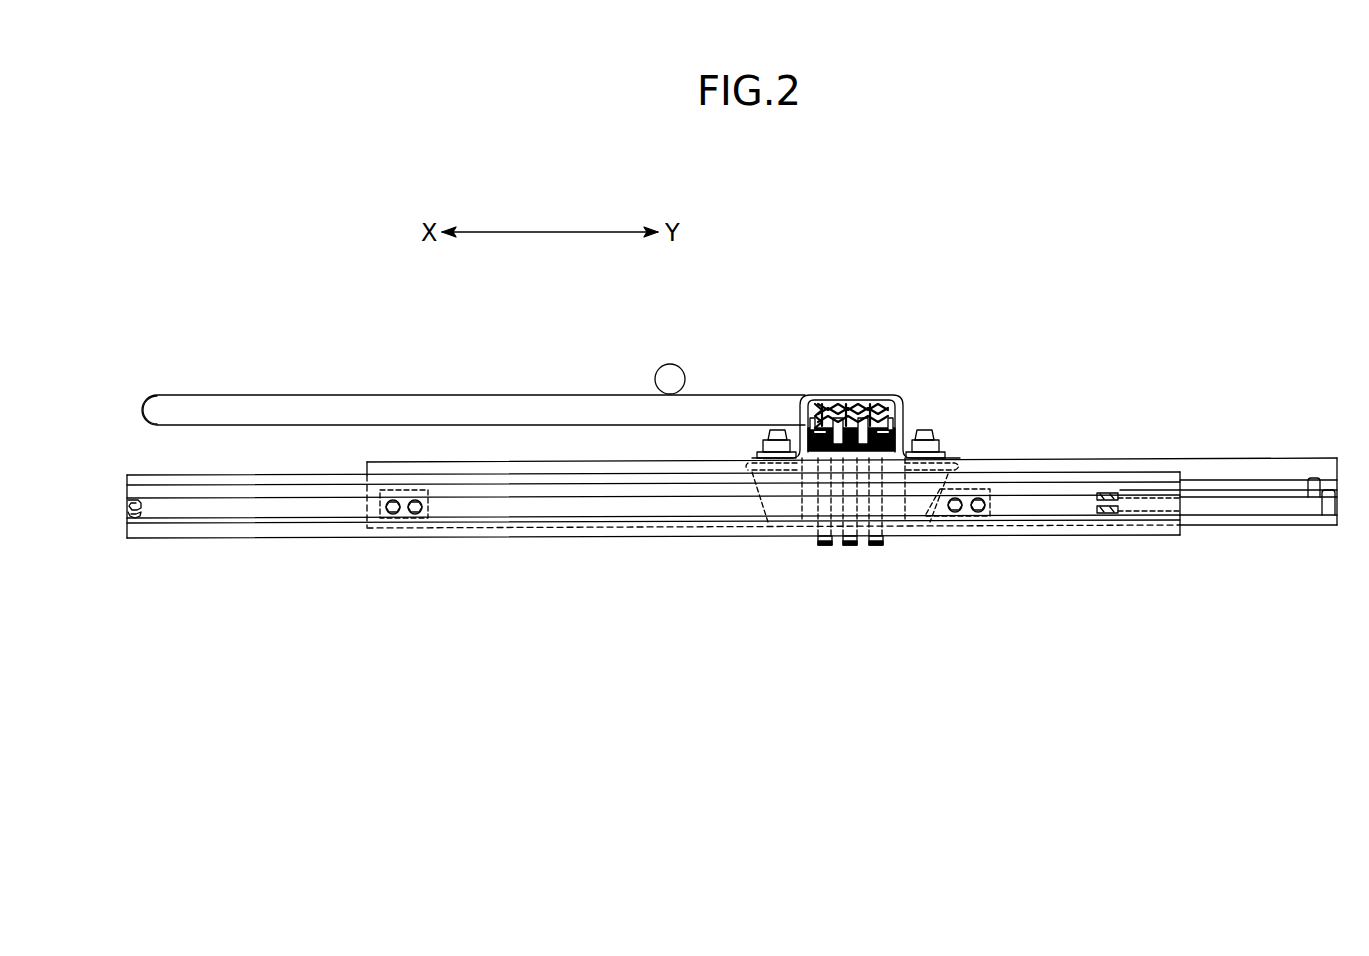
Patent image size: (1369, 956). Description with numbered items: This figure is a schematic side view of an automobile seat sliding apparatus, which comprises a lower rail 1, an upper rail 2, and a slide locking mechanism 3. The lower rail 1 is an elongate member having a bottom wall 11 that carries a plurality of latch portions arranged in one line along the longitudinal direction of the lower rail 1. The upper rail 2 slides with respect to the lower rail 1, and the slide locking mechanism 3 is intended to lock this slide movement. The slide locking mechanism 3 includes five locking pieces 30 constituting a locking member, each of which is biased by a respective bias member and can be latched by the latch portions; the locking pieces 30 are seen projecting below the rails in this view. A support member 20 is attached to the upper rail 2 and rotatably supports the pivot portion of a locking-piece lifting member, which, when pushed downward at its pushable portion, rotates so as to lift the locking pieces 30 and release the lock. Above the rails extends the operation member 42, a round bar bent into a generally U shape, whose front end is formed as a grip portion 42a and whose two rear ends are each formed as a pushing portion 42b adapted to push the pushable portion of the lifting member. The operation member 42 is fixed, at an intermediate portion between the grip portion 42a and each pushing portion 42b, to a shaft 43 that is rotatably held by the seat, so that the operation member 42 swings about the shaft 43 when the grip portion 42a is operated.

The lower rail 1 is at (250, 540).
The bottom wall 11 is at (1116, 540).
The upper rail 2 is at (1200, 457).
The slide locking mechanism 3 is at (909, 432).
The support member 20 is at (873, 398).
The locking pieces 30 is at (824, 548).
The operation member 42 is at (433, 406).
The grip portion 42a is at (149, 397).
The pushing portion 42b is at (838, 397).
The shaft 43 is at (668, 365).